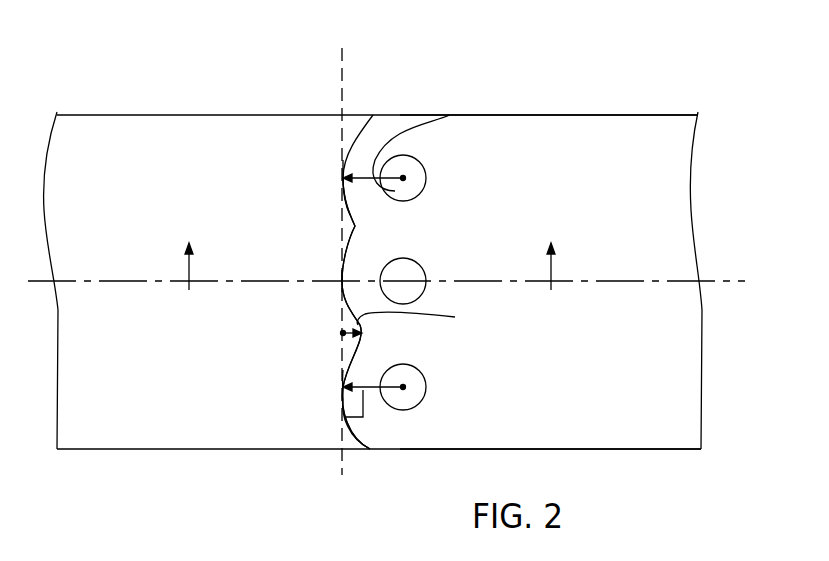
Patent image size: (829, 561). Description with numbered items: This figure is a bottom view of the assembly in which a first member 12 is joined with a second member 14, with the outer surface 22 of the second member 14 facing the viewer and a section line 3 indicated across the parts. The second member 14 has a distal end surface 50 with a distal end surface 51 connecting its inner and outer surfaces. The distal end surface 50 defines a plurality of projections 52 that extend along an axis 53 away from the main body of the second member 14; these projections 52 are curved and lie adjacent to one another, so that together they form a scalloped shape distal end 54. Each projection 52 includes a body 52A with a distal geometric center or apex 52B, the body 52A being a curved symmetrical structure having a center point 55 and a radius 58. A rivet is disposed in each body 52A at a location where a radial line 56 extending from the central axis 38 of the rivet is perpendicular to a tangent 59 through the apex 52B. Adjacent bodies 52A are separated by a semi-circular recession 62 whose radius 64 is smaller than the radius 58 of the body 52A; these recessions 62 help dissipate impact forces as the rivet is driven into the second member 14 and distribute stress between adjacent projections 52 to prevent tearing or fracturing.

The first member 12 is at (162, 127).
The second member 14 is at (665, 123).
The outer surface 22 is at (610, 433).
The axis 53 is at (100, 281).
The section line 3 is at (369, 278).
The tangent 59 is at (342, 80).
The projections 52 is at (362, 148).
The body 52A is at (350, 303).
The apex 52B is at (343, 181).
The radius 58 is at (435, 130).
The center point 55 is at (403, 178).
The central axis 38 is at (403, 387).
The semi-circular recession 62 is at (354, 226).
The distal end surface 50 is at (348, 252).
The distal end surface 51 is at (341, 280).
The radius 64 is at (417, 318).
The radial line 56 is at (372, 387).
The scalloped shape distal end 54 is at (334, 430).